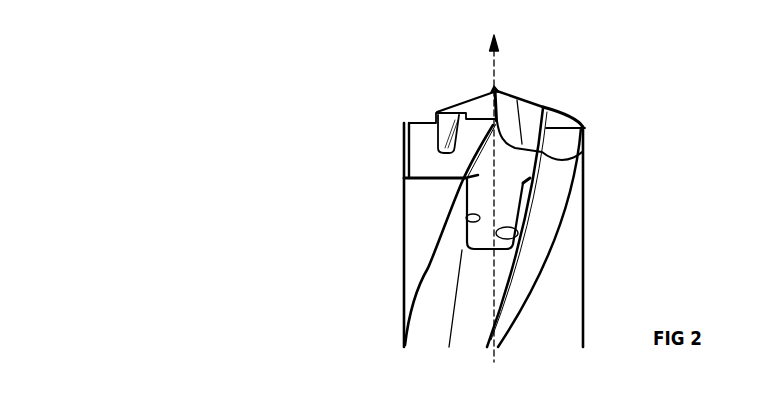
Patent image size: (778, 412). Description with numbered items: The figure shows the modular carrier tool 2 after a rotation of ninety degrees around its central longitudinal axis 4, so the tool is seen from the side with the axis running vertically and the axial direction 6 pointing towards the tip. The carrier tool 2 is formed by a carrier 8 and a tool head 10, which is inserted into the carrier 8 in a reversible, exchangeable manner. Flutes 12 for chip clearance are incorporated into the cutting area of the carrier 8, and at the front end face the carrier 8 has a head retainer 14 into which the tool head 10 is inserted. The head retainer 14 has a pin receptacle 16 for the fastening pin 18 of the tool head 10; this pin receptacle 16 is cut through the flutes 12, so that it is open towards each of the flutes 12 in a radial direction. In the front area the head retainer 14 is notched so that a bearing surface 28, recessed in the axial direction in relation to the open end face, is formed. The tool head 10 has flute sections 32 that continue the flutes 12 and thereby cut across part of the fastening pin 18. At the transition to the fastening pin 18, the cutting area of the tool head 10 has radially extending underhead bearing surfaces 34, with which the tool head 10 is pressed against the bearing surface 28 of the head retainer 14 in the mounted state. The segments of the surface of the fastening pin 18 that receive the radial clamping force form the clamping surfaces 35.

The carrier tool 2 is at (213, 210).
The central longitudinal axis 4 is at (547, 196).
The axial direction 6 is at (563, 40).
The carrier 8 is at (417, 252).
The tool head 10 is at (428, 156).
The flutes 12 is at (431, 321).
The head retainer 14 is at (503, 243).
The pin receptacle 16 is at (466, 218).
The fastening pin 18 is at (494, 210).
The bearing surface 28 is at (342, 195).
The flute sections 32 is at (520, 142).
The underhead bearing surfaces 34 is at (434, 185).
The clamping surfaces 35 is at (514, 220).